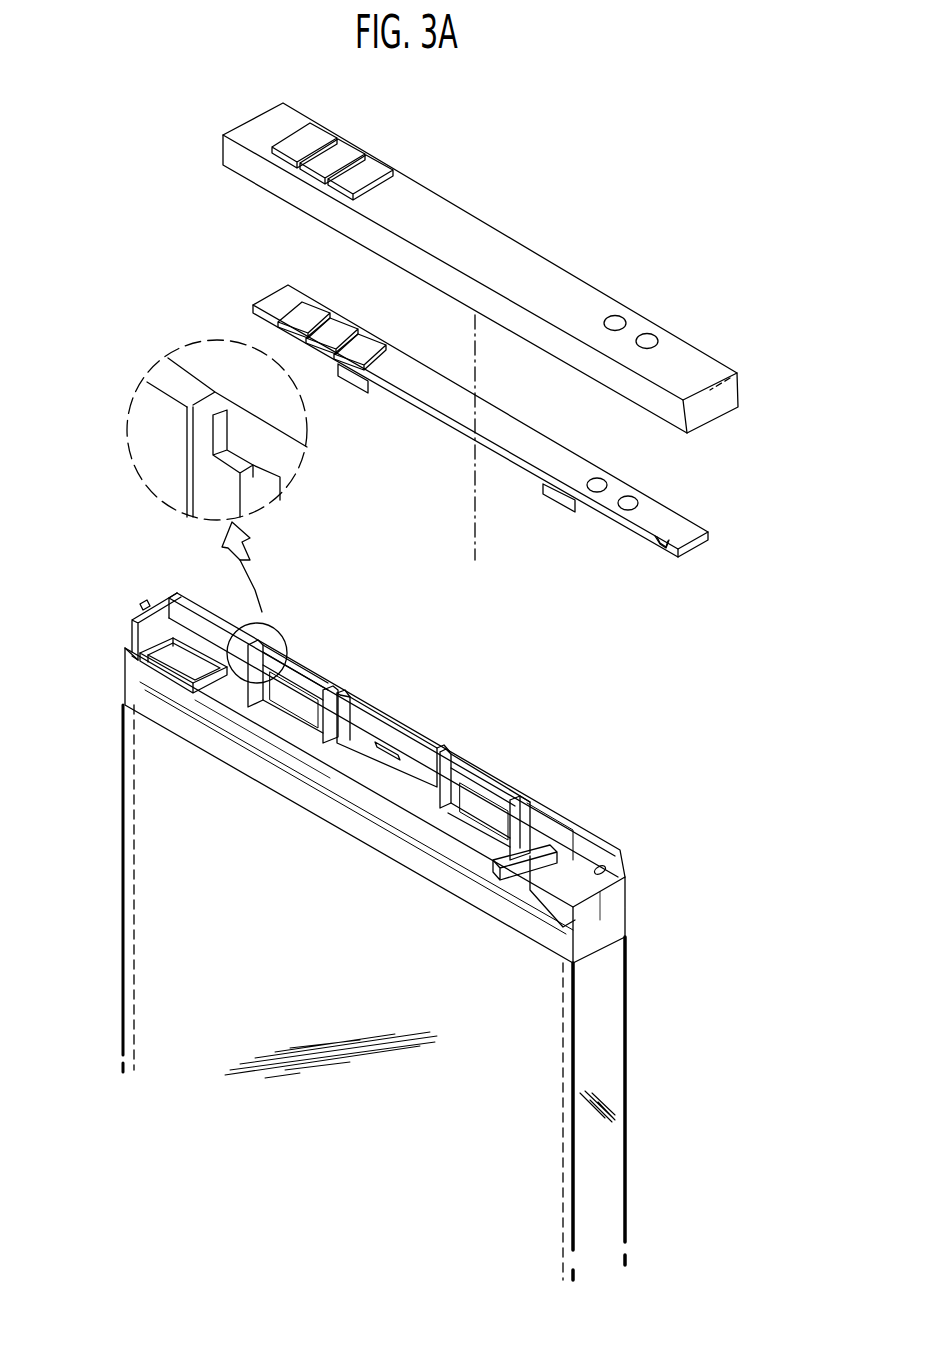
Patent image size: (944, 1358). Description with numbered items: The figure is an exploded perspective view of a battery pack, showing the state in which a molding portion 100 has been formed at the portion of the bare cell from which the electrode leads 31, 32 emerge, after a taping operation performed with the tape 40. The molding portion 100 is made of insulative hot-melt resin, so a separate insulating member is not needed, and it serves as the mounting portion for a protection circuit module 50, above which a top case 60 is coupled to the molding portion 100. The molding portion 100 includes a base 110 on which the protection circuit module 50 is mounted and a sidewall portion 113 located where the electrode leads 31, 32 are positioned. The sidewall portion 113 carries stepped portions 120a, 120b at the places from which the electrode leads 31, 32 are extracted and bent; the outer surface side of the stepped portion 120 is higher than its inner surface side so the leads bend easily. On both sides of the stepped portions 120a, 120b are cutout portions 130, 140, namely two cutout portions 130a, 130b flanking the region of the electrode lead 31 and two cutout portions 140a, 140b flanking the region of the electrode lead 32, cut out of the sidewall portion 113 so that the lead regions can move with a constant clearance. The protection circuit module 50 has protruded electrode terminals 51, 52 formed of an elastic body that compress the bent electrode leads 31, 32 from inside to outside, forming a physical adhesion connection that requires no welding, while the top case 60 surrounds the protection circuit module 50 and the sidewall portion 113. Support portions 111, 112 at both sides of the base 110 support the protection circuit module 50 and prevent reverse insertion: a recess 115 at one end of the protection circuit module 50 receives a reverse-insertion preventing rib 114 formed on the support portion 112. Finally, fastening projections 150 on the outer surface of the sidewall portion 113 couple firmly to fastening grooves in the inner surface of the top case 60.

The top case 60 is at (218, 147).
The protection circuit module 50 is at (235, 295).
The electrode terminal 51 is at (355, 386).
The electrode terminal 52 is at (565, 505).
The recess 115 is at (662, 548).
The molding portion 100 is at (371, 761).
The fastening projection 150 is at (140, 607).
The support portion 111 is at (153, 675).
The tape 40 is at (147, 788).
The base 110 is at (240, 718).
The electrode lead 31 is at (307, 707).
The cutout portion 130 is at (325, 641).
The cutout portion 130a is at (270, 628).
The cutout portion 130b is at (352, 685).
The sidewall portion 113 is at (356, 735).
The cutout portion 140 is at (519, 757).
The cutout portion 140a is at (447, 750).
The cutout portion 140b is at (530, 820).
The reverse-insertion preventing rib 114 is at (525, 845).
The stepped portion 120 is at (360, 823).
The stepped portion 120a is at (330, 712).
The stepped portion 120b is at (440, 755).
The electrode lead 32 is at (492, 815).
The support portion 112 is at (583, 945).